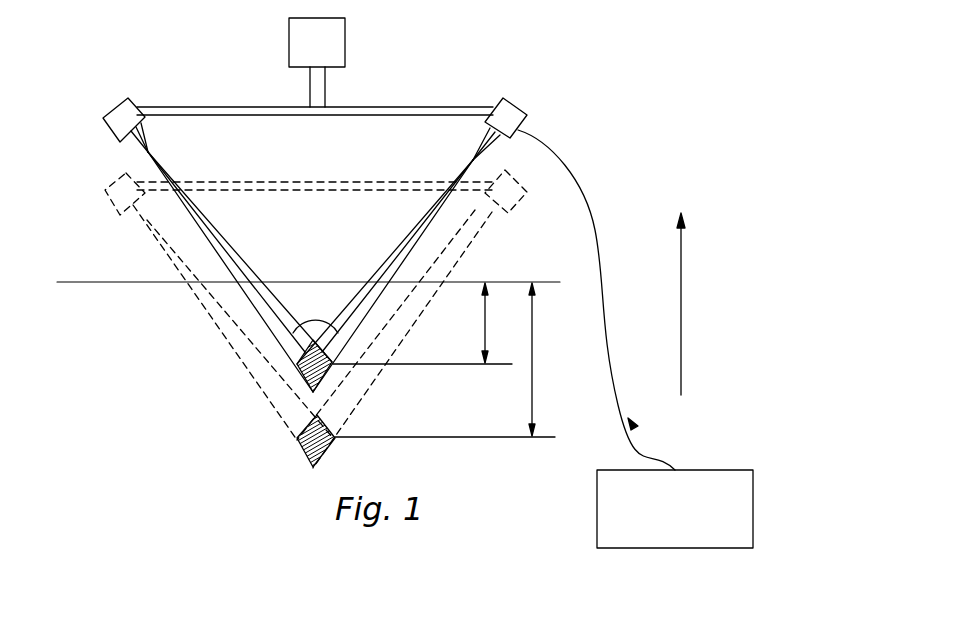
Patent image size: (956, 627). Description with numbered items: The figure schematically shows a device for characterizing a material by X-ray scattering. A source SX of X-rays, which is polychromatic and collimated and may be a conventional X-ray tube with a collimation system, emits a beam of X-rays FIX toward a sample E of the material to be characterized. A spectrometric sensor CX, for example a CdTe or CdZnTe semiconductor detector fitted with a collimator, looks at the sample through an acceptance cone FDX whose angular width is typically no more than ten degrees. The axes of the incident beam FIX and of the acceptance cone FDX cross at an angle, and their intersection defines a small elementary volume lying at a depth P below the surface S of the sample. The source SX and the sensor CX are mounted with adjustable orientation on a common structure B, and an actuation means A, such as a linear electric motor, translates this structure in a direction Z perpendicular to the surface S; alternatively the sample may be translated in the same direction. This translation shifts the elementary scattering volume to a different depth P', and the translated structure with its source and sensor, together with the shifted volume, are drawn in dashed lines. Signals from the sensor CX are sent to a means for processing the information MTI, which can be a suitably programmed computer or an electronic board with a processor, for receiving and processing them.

The actuation means A is at (327, 37).
The structure B is at (177, 107).
The source of X-rays SX is at (117, 122).
The spectrometric sensor for X-rays CX is at (510, 118).
The beam of X-rays FIX is at (225, 235).
The acceptance cone FDX is at (385, 260).
The surface of the sample S is at (90, 282).
The sample E is at (103, 313).
The depth P is at (422, 323).
The depth P' is at (450, 360).
The direction Z is at (683, 286).
The means for processing the information MTI is at (702, 470).